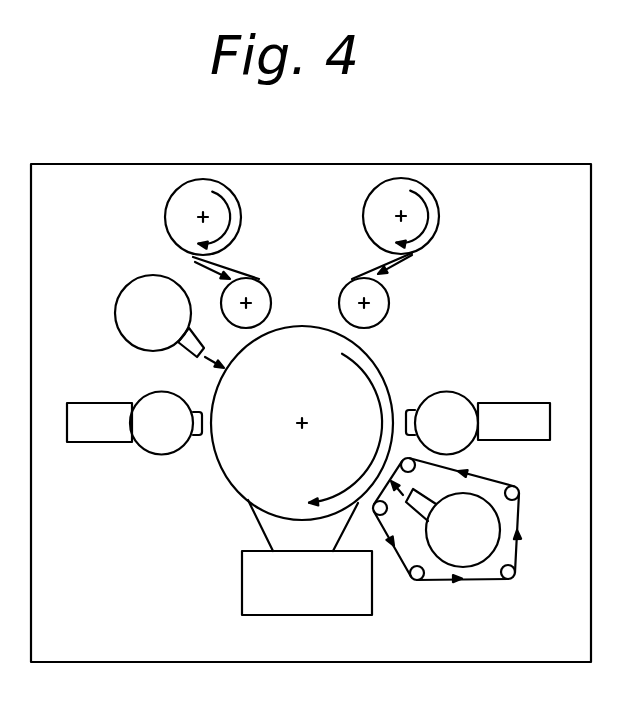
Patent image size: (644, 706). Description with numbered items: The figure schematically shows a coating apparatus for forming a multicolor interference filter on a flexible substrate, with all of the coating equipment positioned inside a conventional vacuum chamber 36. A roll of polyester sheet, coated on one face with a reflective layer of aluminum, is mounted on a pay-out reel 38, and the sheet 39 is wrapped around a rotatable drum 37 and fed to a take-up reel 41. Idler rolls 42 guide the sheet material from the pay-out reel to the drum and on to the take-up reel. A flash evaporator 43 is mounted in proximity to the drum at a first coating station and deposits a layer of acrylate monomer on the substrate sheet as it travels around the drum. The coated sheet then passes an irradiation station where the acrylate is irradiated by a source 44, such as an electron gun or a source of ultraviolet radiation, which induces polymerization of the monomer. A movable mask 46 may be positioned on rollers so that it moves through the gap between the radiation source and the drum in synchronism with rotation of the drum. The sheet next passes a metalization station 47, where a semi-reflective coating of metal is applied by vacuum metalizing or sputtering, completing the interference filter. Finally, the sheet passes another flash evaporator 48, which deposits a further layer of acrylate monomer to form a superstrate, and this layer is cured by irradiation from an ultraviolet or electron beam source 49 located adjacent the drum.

The vacuum chamber 36 is at (500, 164).
The rotatable drum 37 is at (228, 480).
The pay-out reel 38 is at (439, 204).
The sheet 39 is at (227, 266).
The take-up reel 41 is at (241, 203).
The idler rolls 42 is at (267, 285).
The flash evaporator 43 is at (520, 403).
The source 44 is at (480, 568).
The movable mask 46 is at (522, 508).
The metalization station 47 is at (307, 617).
The flash evaporator 48 is at (88, 442).
The ultraviolet or electron beam source 49 is at (121, 340).